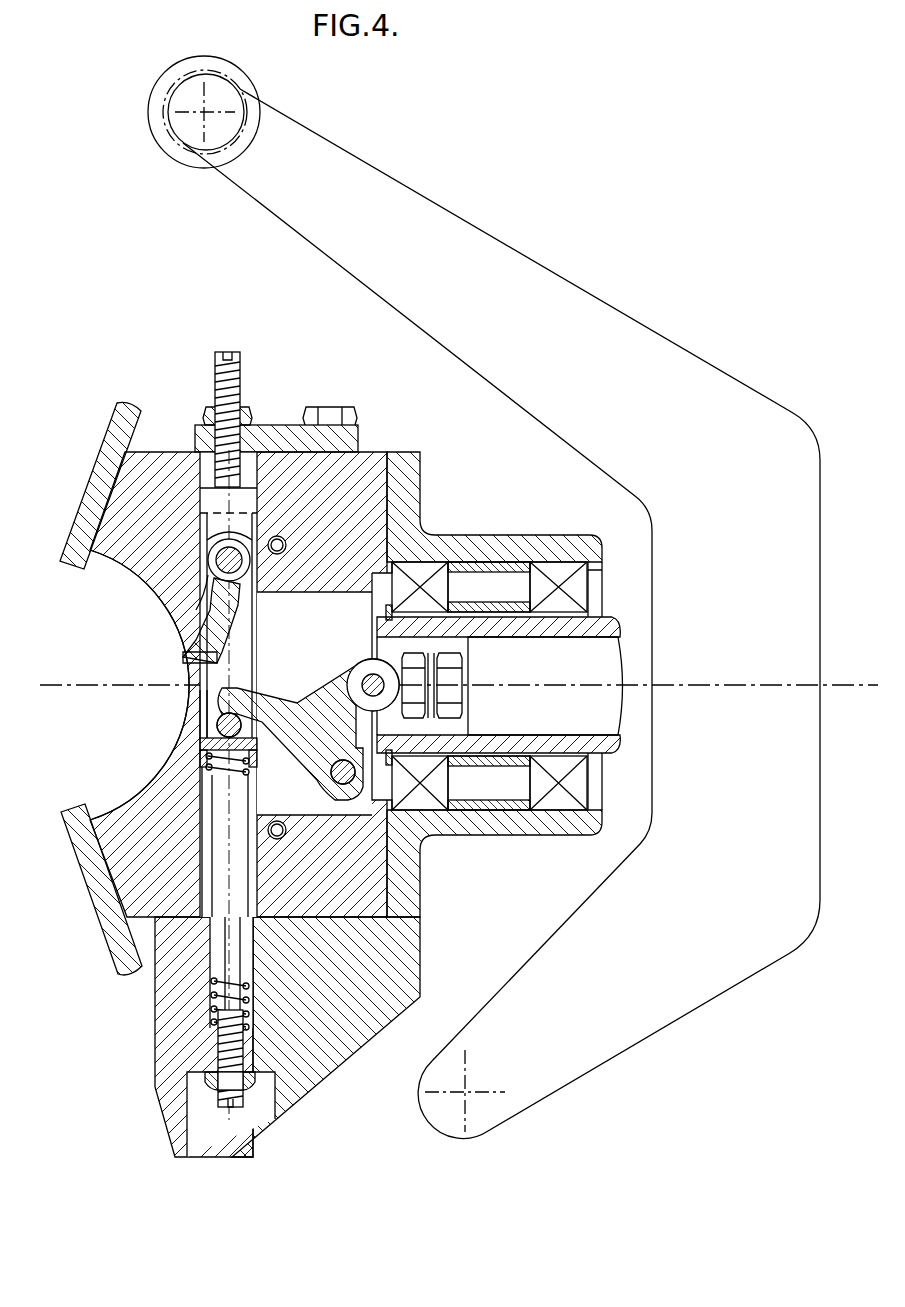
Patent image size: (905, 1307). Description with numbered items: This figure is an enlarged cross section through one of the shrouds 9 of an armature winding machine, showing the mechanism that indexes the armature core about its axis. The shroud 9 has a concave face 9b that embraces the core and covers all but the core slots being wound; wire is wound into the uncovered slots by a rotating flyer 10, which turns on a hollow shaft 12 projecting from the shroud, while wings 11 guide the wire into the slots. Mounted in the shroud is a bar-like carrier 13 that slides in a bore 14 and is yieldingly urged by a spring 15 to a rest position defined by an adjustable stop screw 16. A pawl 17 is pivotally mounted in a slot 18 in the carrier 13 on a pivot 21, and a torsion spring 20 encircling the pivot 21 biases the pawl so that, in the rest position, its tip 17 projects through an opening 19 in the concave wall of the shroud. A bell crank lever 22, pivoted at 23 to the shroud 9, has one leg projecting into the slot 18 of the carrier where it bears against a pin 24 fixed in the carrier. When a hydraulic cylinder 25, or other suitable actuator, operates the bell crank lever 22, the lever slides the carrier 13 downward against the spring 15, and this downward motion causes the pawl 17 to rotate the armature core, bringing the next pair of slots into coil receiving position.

The shroud 9 is at (173, 452).
The concave face 9b is at (169, 613).
The rotating flyer 10 is at (303, 114).
The wing 11 is at (99, 452).
The hollow shaft 12 is at (637, 637).
The carrier 13 is at (200, 748).
The bore 14 is at (250, 452).
The spring 15 is at (210, 1007).
The adjustable stop screw 16 is at (241, 374).
The pawl 17 is at (183, 657).
The slot 18 is at (242, 681).
The opening 19 is at (197, 708).
The torsion spring 20 is at (240, 628).
The pivot 21 is at (207, 566).
The bell crank lever 22 is at (317, 690).
The pivot 23 is at (331, 775).
The pin 24 is at (216, 727).
The hydraulic cylinder 25 is at (555, 674).